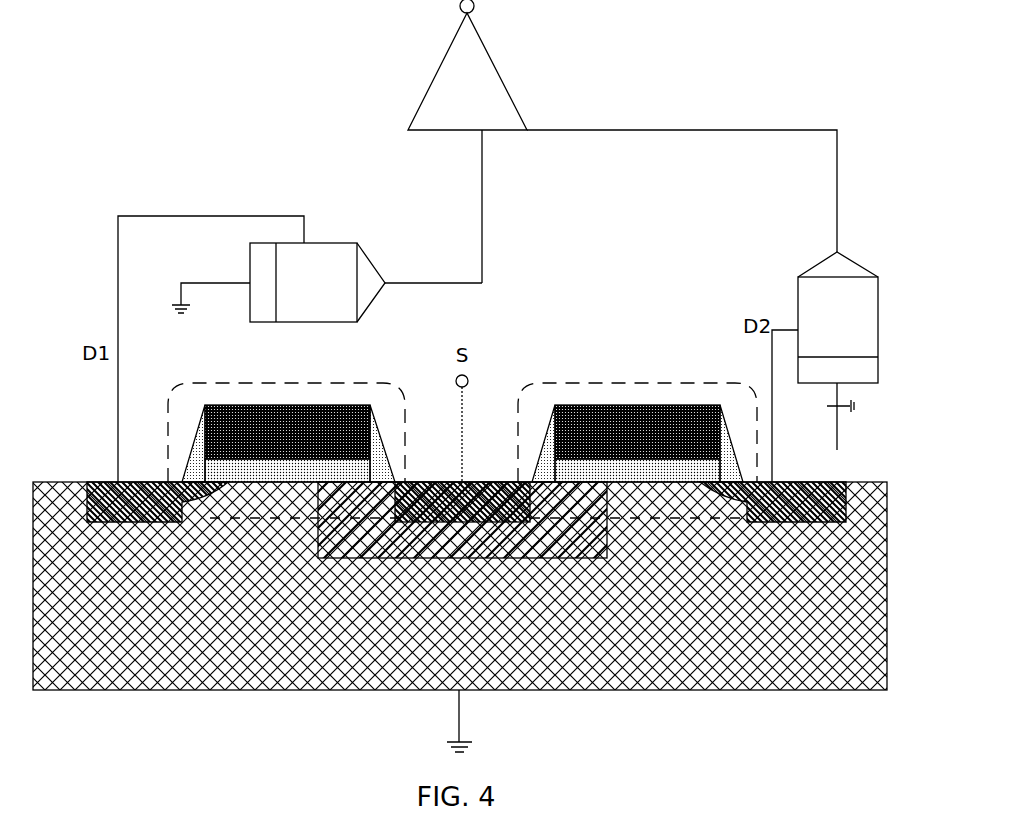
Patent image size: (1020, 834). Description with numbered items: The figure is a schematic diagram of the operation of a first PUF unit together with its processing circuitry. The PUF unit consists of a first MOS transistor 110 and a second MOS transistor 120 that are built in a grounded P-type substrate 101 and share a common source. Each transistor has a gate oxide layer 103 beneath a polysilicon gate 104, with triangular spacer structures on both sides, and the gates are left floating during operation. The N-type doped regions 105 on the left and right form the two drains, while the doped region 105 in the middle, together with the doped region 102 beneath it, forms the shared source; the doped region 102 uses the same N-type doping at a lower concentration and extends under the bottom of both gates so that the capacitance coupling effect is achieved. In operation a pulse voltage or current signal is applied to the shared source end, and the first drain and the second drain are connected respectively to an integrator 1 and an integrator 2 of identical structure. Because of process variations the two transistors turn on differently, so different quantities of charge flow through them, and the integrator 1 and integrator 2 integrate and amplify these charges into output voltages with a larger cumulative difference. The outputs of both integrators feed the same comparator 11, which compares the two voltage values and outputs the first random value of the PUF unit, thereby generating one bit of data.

The P-type substrate 101 is at (460, 586).
The doped region below the shared source 102 is at (462, 520).
The gate oxide layer 103 is at (462, 471).
The polysilicon gate 104 is at (462, 432).
The N-type doped region 105 is at (466, 502).
The first MOS transistor 110 is at (222, 384).
The second MOS transistor 120 is at (705, 384).
The comparator 11 is at (622, 141).
The integrator 1 is at (327, 282).
The integrator 2 is at (838, 351).